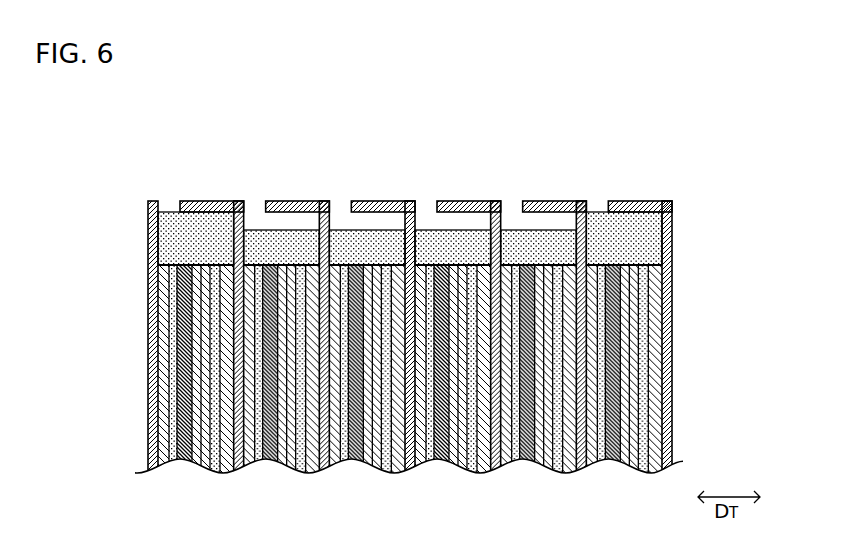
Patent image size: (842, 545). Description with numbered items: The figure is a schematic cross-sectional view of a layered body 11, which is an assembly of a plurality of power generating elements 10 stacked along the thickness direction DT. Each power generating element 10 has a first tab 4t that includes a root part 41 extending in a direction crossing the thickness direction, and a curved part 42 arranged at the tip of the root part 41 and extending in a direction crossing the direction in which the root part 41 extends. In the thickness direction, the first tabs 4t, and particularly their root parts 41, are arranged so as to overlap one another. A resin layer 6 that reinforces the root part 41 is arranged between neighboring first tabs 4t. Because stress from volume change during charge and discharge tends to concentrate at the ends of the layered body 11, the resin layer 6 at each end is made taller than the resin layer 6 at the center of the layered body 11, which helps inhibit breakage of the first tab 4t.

The layered body 11 is at (578, 128).
The first tab 4t is at (655, 158).
The root part 41 is at (674, 217).
The curved part 42 is at (652, 203).
The resin layer 6 is at (167, 228).
The power generating element 10 is at (410, 394).